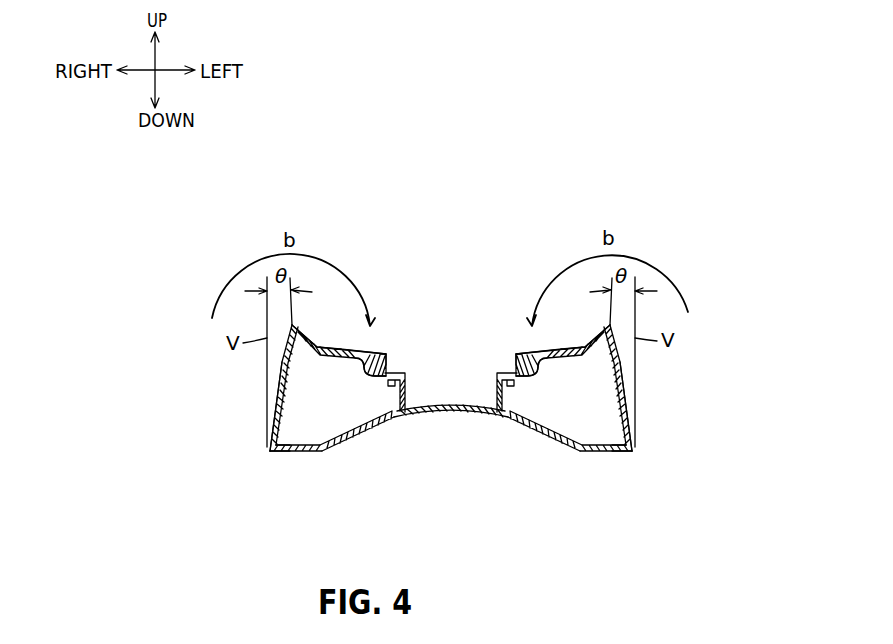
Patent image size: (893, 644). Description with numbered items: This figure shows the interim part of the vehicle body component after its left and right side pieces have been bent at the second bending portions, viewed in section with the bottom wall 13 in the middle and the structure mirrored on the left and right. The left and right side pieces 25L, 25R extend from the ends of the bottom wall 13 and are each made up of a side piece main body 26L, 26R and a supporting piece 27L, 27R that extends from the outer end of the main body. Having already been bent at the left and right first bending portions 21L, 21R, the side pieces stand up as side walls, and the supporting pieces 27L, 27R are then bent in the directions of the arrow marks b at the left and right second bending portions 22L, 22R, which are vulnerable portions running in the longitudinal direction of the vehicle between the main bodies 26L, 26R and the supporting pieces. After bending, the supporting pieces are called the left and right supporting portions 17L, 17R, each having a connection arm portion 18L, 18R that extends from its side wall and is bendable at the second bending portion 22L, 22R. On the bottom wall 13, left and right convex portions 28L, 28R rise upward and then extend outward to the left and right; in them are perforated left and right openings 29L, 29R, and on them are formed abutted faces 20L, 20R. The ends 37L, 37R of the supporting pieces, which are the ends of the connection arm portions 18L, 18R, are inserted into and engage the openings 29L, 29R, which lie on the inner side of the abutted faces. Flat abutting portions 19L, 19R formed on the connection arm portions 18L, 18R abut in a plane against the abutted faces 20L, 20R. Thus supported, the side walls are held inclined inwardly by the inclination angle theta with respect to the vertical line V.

The bottom wall 13 is at (446, 404).
The right supporting portion 17R is at (402, 191).
The left supporting portion 17L is at (588, 191).
The right connection arm portion 18R is at (352, 349).
The left connection arm portion 18L is at (550, 349).
The right abutting portion 19R is at (331, 360).
The left abutting portion 19L is at (571, 360).
The right abutted face 20R is at (386, 344).
The left abutted face 20L is at (516, 344).
The right first bending portion 21R is at (268, 450).
The left first bending portion 21L is at (634, 450).
The right second bending portion 22R is at (332, 350).
The left second bending portion 22L is at (570, 350).
The right side piece 25R is at (270, 376).
The left side piece 25L is at (632, 373).
The right side piece main body 26R is at (268, 402).
The left side piece main body 26L is at (638, 398).
The right supporting piece 27R is at (368, 352).
The left supporting piece 27L is at (534, 352).
The right convex portion 28R is at (387, 358).
The left convex portion 28L is at (515, 358).
The right opening 29R is at (354, 436).
The left opening 29L is at (548, 436).
The end of right supporting piece 37R is at (371, 384).
The end of left supporting piece 37L is at (531, 384).